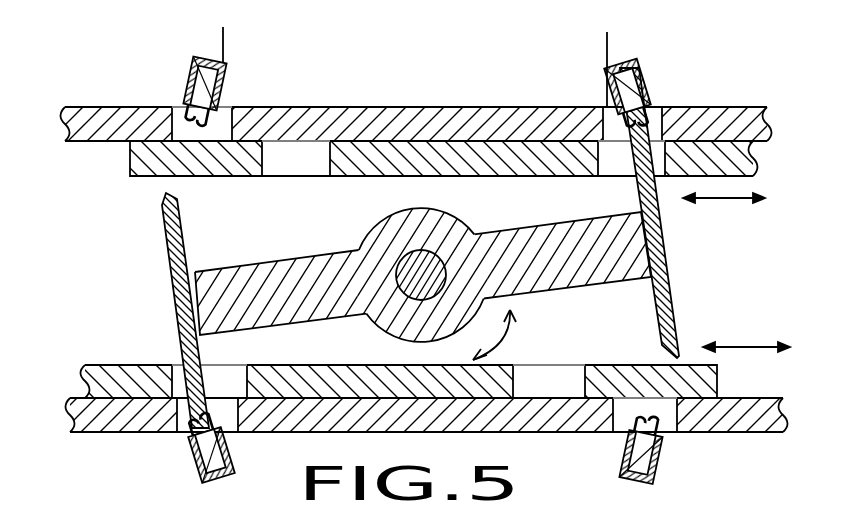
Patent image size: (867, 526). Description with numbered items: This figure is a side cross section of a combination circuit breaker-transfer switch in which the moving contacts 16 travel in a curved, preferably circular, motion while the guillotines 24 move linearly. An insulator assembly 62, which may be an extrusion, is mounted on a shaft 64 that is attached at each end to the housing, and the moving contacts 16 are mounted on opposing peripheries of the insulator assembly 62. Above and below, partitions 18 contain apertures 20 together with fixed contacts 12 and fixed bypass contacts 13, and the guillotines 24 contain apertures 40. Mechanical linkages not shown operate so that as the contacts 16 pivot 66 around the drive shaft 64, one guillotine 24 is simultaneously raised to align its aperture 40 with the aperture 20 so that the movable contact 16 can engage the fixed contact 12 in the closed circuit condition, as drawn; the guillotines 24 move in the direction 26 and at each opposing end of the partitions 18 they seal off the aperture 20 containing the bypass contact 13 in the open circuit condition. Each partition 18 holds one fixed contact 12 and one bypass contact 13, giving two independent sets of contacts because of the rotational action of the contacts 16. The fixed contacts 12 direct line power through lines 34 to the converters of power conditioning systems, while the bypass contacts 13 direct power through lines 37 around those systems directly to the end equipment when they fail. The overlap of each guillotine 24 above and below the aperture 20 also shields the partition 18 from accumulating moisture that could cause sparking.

The fixed contact 12 is at (601, 86).
The fixed bypass contact 13 is at (225, 95).
The moving contact 16 is at (165, 291).
The partition 18 is at (716, 107).
The aperture 20 is at (180, 103).
The guillotine 24 is at (140, 178).
The direction of movement arrow 26 is at (735, 205).
The line 34 is at (607, 58).
The line 37 is at (222, 43).
The aperture 40 is at (304, 167).
The insulator assembly 62 is at (580, 288).
The shaft 64 is at (414, 254).
The pivot 66 is at (502, 334).